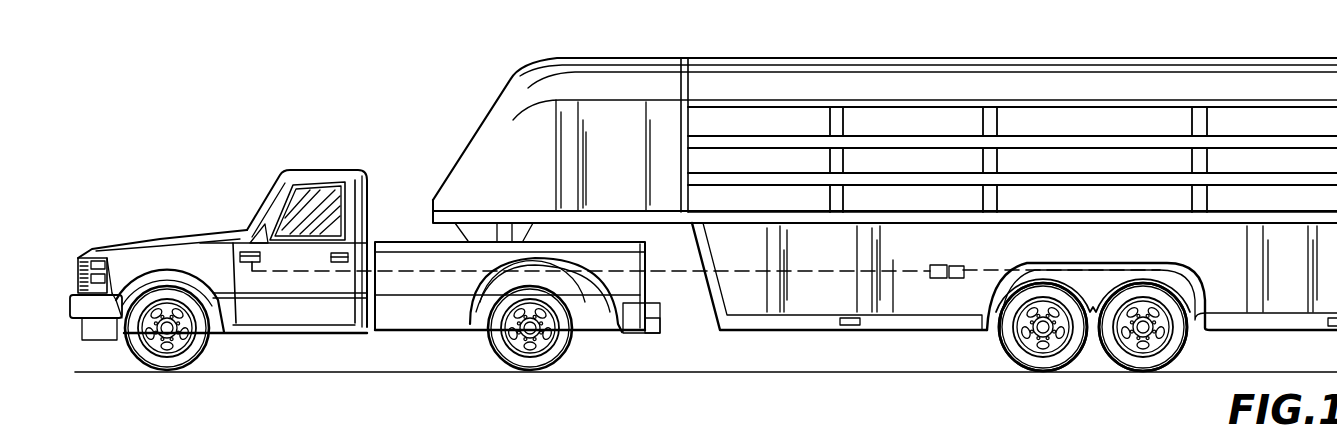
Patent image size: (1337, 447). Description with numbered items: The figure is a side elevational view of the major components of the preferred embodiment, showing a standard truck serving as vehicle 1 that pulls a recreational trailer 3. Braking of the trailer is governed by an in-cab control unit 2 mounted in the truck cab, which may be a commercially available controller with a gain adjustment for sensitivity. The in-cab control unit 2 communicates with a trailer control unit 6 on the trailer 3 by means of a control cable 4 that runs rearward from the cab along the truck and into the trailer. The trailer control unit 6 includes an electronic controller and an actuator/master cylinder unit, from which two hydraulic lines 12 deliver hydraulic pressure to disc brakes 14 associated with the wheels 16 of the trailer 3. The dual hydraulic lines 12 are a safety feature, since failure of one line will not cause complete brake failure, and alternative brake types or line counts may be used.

The vehicle 1 is at (365, 245).
The in-cab control unit 2 is at (247, 249).
The trailer 3 is at (862, 250).
The control cable 4 is at (413, 272).
The trailer control unit 6 is at (947, 278).
The hydraulic lines 12 is at (993, 272).
The disc brakes 14 is at (1152, 357).
The wheels 16 is at (1157, 363).